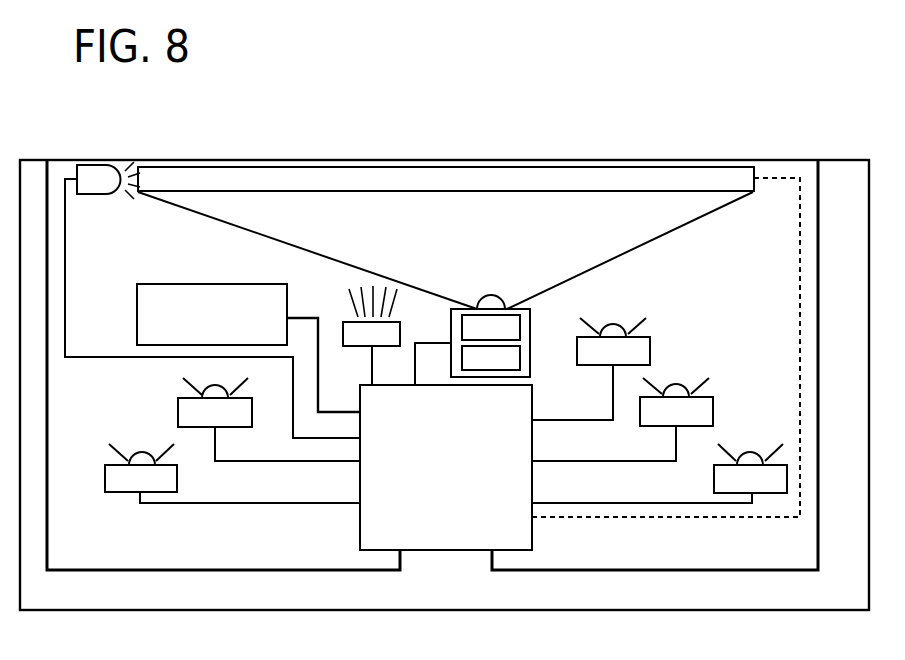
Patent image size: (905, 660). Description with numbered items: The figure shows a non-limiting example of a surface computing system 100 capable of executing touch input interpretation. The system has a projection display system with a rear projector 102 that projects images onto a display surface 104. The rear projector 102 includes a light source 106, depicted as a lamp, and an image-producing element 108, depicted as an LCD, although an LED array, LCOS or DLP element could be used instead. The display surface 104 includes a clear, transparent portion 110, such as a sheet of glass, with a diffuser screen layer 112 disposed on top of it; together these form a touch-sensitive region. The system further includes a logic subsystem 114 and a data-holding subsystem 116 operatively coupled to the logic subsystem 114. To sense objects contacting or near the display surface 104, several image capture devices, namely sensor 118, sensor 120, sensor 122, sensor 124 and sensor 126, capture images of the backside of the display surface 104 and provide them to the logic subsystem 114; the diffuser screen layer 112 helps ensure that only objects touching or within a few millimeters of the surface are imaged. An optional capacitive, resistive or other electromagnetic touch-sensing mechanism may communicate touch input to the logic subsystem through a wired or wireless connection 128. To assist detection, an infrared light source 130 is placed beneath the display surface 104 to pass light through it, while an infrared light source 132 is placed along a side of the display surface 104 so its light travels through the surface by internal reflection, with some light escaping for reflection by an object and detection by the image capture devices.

The surface computing system 100 is at (658, 127).
The rear projector 102 is at (532, 322).
The display surface 104 is at (184, 150).
The light source 106 is at (521, 360).
The image-producing element 108 is at (462, 328).
The clear, transparent portion 110 is at (262, 182).
The diffuser screen layer 112 is at (323, 166).
The logic subsystem 114 is at (532, 497).
The data-holding subsystem 116 is at (137, 305).
The sensor 118 is at (190, 412).
The sensor 120 is at (168, 478).
The sensor 122 is at (640, 351).
The sensor 124 is at (701, 412).
The sensor 126 is at (735, 472).
The wired or wireless connection 128 is at (800, 283).
The infrared light source 130 is at (348, 318).
The infrared light source 132 is at (94, 196).